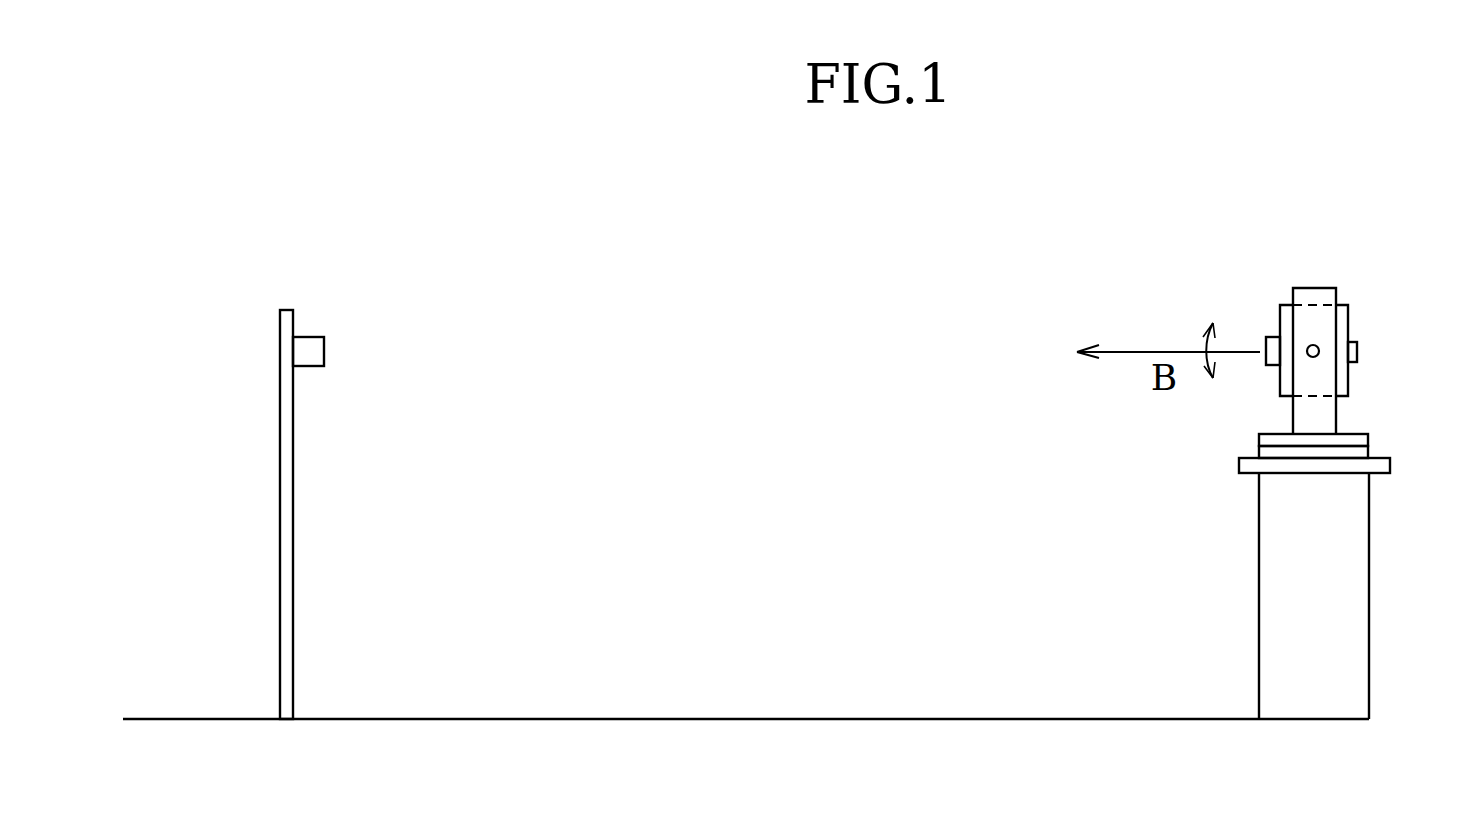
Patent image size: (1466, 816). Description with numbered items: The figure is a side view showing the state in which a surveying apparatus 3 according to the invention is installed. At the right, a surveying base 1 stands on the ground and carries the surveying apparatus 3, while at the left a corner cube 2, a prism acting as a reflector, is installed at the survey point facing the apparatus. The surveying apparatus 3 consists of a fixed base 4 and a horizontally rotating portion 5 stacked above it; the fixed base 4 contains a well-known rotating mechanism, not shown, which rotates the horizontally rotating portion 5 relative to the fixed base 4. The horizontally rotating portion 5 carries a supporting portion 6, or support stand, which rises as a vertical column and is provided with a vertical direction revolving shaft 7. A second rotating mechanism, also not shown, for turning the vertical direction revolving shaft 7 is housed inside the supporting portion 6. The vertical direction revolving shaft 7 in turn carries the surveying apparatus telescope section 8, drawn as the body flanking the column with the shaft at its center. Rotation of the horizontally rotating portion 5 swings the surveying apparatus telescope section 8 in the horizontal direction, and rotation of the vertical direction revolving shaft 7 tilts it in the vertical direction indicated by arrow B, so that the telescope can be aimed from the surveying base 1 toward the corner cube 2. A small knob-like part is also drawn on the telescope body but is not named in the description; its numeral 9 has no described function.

The surveying base 1 is at (1262, 565).
The corner cube 2 is at (320, 351).
The surveying apparatus 3 is at (1299, 282).
The fixed base 4 is at (1368, 452).
The horizontally rotating portion 5 is at (1262, 442).
The supporting portion 6 is at (1322, 288).
The vertical direction revolving shaft 7 is at (1318, 345).
The surveying apparatus telescope section 8 is at (1343, 380).
The knob 9 is at (1272, 337).